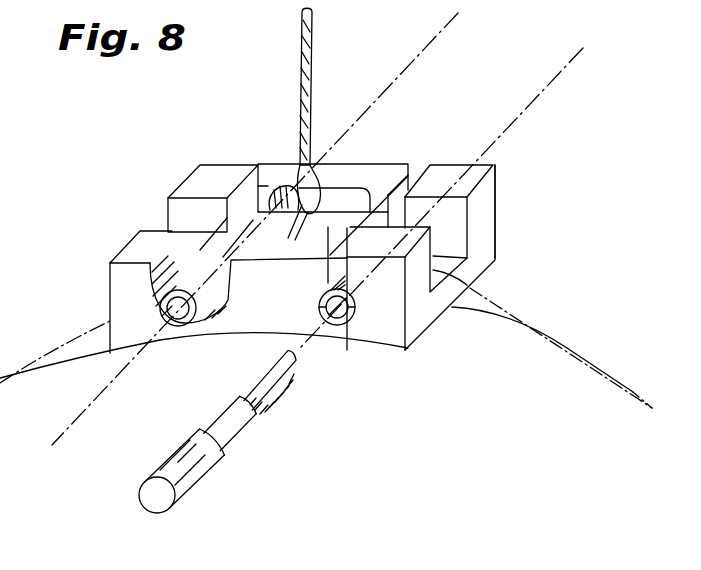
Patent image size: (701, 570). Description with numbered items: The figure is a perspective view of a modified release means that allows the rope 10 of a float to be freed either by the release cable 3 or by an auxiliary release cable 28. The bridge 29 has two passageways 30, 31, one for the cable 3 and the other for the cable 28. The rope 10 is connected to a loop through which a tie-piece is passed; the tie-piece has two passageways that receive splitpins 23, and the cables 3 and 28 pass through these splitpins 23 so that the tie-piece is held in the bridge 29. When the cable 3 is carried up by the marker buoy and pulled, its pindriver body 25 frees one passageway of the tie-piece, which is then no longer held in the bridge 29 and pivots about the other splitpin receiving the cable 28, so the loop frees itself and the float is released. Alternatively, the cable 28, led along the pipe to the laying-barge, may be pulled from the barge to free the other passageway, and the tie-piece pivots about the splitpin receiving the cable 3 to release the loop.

The release cable 3 is at (365, 110).
The rope 10 is at (313, 54).
The splitpins 23 is at (186, 324).
The pindriver body 25 is at (208, 468).
The auxiliary release cable 28 is at (518, 108).
The bridge 29 is at (192, 187).
The passageway 30 is at (250, 188).
The passageway 31 is at (407, 182).